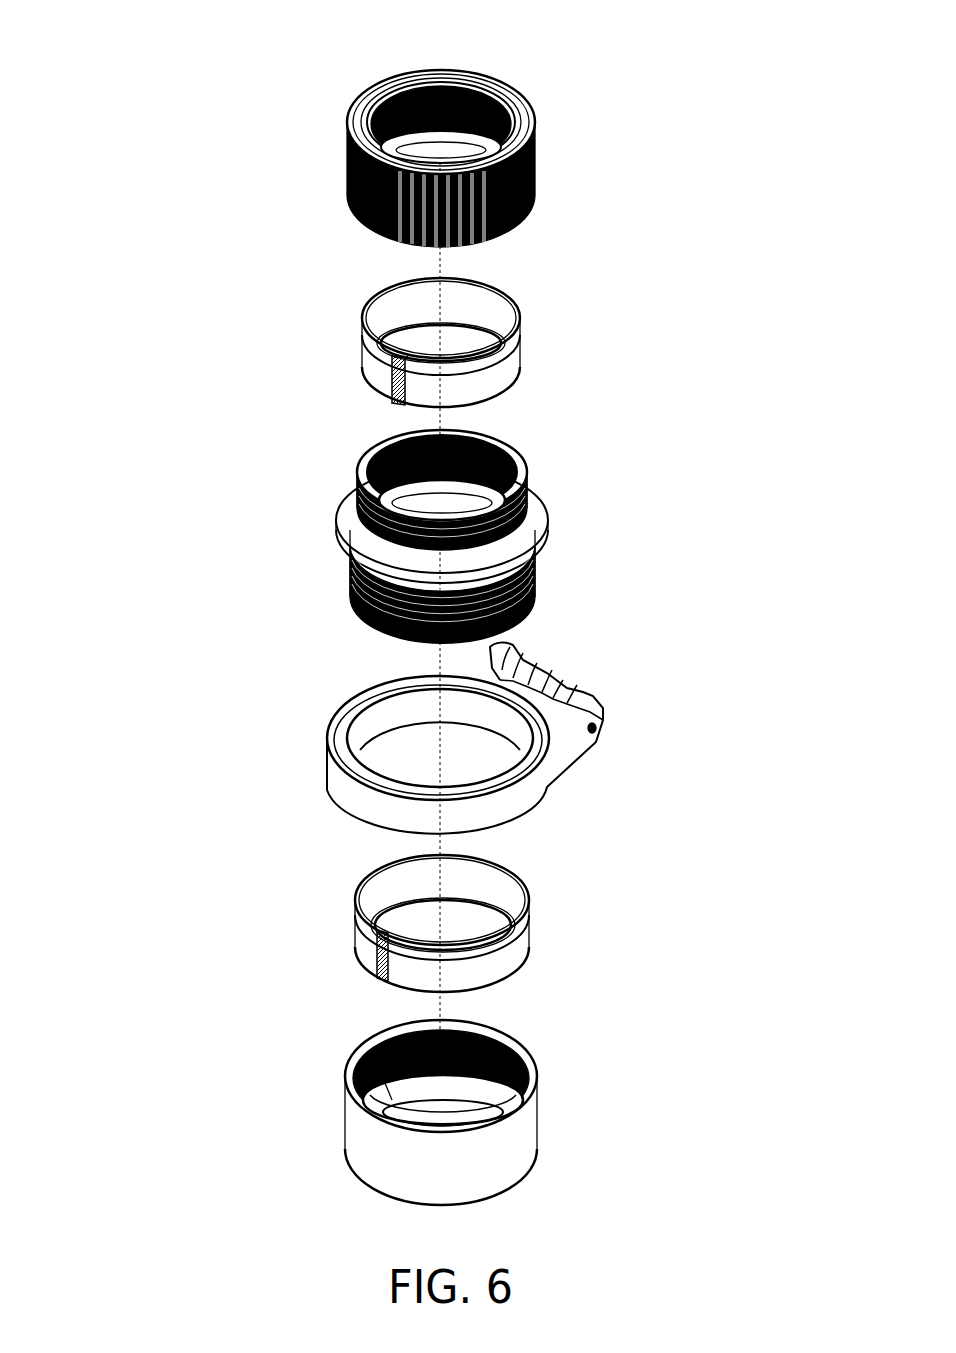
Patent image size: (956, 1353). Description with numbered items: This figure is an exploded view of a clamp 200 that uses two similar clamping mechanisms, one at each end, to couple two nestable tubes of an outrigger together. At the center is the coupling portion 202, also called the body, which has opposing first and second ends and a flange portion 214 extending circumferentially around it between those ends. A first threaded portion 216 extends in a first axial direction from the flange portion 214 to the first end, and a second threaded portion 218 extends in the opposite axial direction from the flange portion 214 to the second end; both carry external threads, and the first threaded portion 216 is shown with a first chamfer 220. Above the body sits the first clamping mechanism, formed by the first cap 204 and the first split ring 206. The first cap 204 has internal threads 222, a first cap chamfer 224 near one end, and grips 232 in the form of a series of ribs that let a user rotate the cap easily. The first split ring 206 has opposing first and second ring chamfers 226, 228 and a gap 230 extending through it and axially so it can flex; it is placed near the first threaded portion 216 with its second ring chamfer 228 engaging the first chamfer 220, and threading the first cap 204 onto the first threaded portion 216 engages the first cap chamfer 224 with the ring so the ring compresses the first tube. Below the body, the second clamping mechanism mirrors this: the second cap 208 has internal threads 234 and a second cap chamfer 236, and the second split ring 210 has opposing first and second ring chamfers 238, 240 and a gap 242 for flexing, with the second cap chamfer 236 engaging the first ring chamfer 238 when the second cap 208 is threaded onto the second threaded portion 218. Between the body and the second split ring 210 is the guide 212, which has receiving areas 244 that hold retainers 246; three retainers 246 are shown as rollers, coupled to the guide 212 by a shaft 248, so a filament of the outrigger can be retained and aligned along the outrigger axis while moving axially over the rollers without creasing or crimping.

The clamp 200 is at (130, 112).
The coupling portion 202 is at (293, 516).
The first cap 204 is at (577, 135).
The first split ring 206 is at (517, 367).
The second cap 208 is at (520, 1135).
The second split ring 210 is at (522, 950).
The guide 212 is at (542, 786).
The flange portion 214 is at (533, 527).
The first threaded portion 216 is at (527, 495).
The second threaded portion 218 is at (537, 576).
The first chamfer 220 is at (522, 457).
The internal threads 222 is at (472, 108).
The first cap chamfer 224 is at (398, 82).
The first ring chamfer 226 is at (516, 336).
The second ring chamfer 228 is at (500, 408).
The gap 230 is at (390, 396).
The grips 232 is at (525, 228).
The internal threads 234 is at (522, 1047).
The second cap chamfer 236 is at (375, 1047).
The first ring chamfer 238 is at (497, 989).
The second ring chamfer 240 is at (527, 908).
The gap 242 is at (377, 986).
The receiving areas 244 is at (500, 680).
The retainer 246 is at (505, 660).
The shaft 248 is at (598, 730).